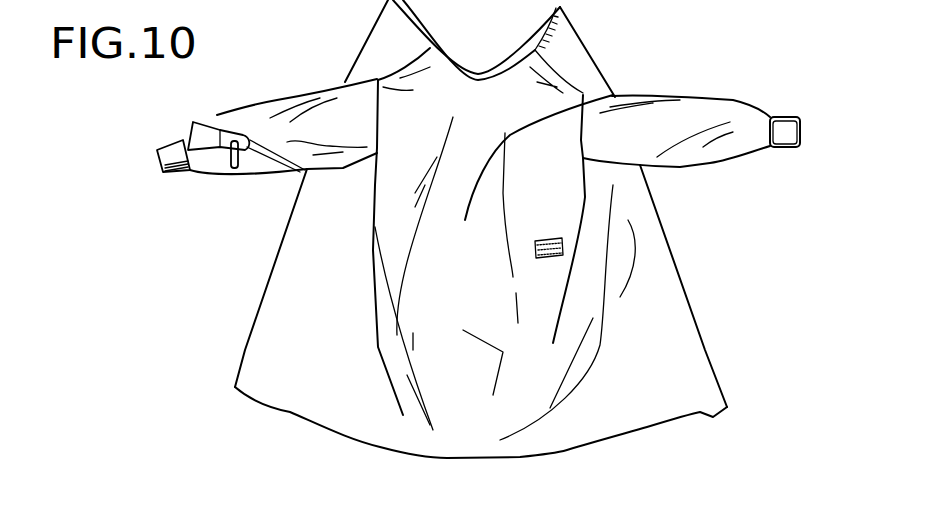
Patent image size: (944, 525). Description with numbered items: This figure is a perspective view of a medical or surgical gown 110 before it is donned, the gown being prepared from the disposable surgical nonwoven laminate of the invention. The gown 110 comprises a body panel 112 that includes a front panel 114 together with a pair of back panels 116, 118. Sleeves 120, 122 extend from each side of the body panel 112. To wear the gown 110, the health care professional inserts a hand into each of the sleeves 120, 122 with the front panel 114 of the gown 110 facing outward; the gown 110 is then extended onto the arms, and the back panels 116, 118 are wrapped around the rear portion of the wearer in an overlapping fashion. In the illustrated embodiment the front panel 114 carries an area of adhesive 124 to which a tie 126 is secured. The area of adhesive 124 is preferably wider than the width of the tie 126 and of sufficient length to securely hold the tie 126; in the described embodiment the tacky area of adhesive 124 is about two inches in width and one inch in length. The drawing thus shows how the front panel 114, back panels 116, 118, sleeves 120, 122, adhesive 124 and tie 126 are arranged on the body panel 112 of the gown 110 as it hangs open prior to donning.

The surgical gown 110 is at (335, 307).
The body panel 112 is at (480, 340).
The front panel 114 is at (583, 95).
The back panel 116 is at (318, 220).
The back panel 118 is at (630, 207).
The sleeve 120 is at (325, 123).
The sleeve 122 is at (745, 117).
The area of adhesive 124 is at (555, 252).
The tie 126 is at (230, 140).